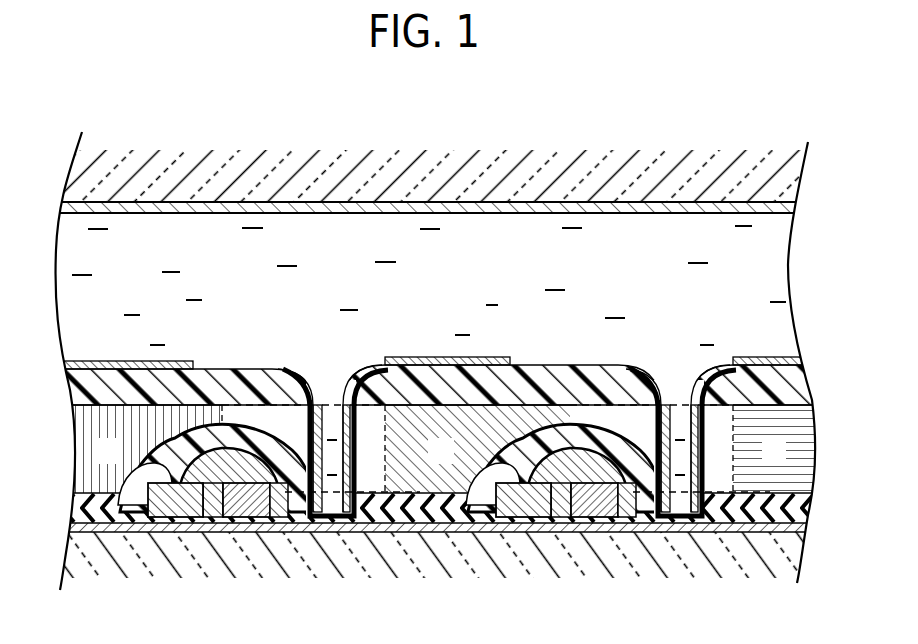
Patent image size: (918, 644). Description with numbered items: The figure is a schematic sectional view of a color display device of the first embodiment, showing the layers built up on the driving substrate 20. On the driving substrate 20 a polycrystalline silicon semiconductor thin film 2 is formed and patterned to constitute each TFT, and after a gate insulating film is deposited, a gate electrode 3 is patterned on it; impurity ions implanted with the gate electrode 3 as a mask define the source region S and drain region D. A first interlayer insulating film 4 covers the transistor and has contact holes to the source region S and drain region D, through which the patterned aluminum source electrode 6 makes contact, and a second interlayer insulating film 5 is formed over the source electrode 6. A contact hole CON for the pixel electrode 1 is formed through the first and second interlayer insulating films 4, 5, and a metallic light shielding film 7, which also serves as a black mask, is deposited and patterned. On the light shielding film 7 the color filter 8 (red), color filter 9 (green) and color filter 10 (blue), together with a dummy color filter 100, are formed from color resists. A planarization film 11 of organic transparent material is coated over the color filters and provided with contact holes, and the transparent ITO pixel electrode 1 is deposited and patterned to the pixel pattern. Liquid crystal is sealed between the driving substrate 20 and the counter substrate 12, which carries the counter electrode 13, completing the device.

The pixel electrode 1 is at (76, 363).
The semiconductor thin film 2 is at (277, 535).
The gate electrode 3 is at (238, 535).
The first interlayer insulating film 4 is at (84, 525).
The second interlayer insulating film 5 is at (84, 500).
The source electrode 6 is at (138, 536).
The light shielding film 7 is at (596, 428).
The color filter (R) 8 is at (92, 447).
The color filter (G) 9 is at (452, 413).
The color filter (B) 10 is at (805, 455).
The planarization film 11 is at (92, 388).
The counter substrate 12 is at (787, 173).
The counter electrode 13 is at (787, 208).
The driving substrate 20 is at (780, 548).
The dummy color filter 100 is at (484, 416).
The contact hole CON is at (335, 375).
The thin film transistor TFT is at (390, 472).
The source region S is at (335, 555).
The drain region D is at (453, 470).